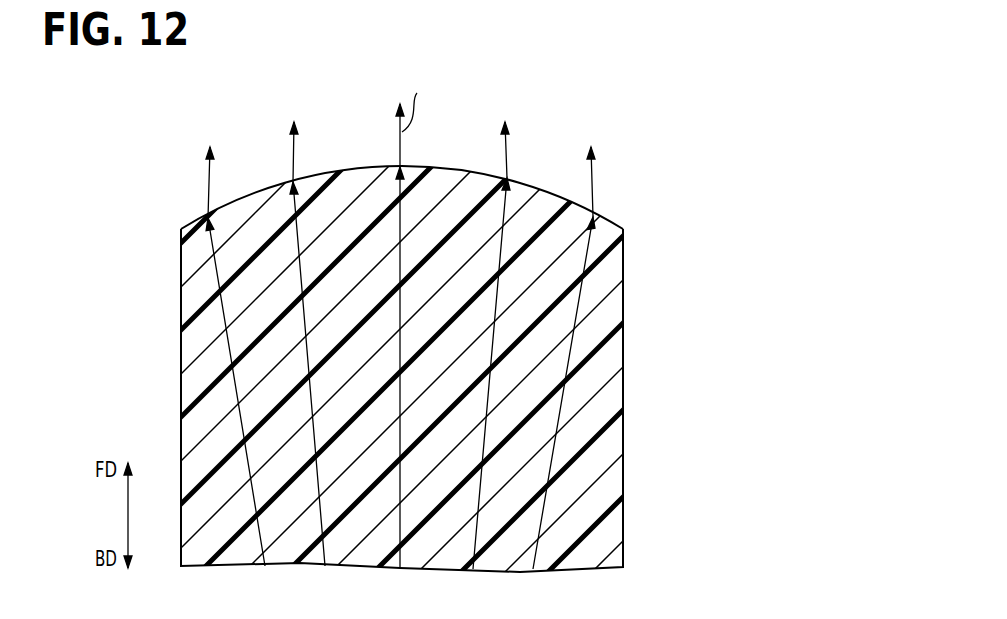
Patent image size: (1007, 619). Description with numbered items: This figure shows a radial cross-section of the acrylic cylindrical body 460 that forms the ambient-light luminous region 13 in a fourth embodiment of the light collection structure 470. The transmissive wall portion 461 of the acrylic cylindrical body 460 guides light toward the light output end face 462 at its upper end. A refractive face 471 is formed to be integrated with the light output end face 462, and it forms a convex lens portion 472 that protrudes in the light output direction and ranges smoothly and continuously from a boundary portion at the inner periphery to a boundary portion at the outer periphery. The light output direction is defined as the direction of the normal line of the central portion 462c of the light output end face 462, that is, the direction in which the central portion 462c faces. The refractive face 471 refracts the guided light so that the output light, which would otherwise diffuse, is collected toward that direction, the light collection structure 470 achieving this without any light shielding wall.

The ambient-light luminous region 13 is at (485, 153).
The acrylic cylindrical body 460 is at (503, 375).
The transmissive wall portion 461 is at (503, 375).
The light output end face 462 is at (465, 193).
The refractive face 471 is at (622, 228).
The central portion 462c is at (397, 163).
The light collection structure 470 is at (257, 188).
The convex lens portion 472 is at (328, 167).